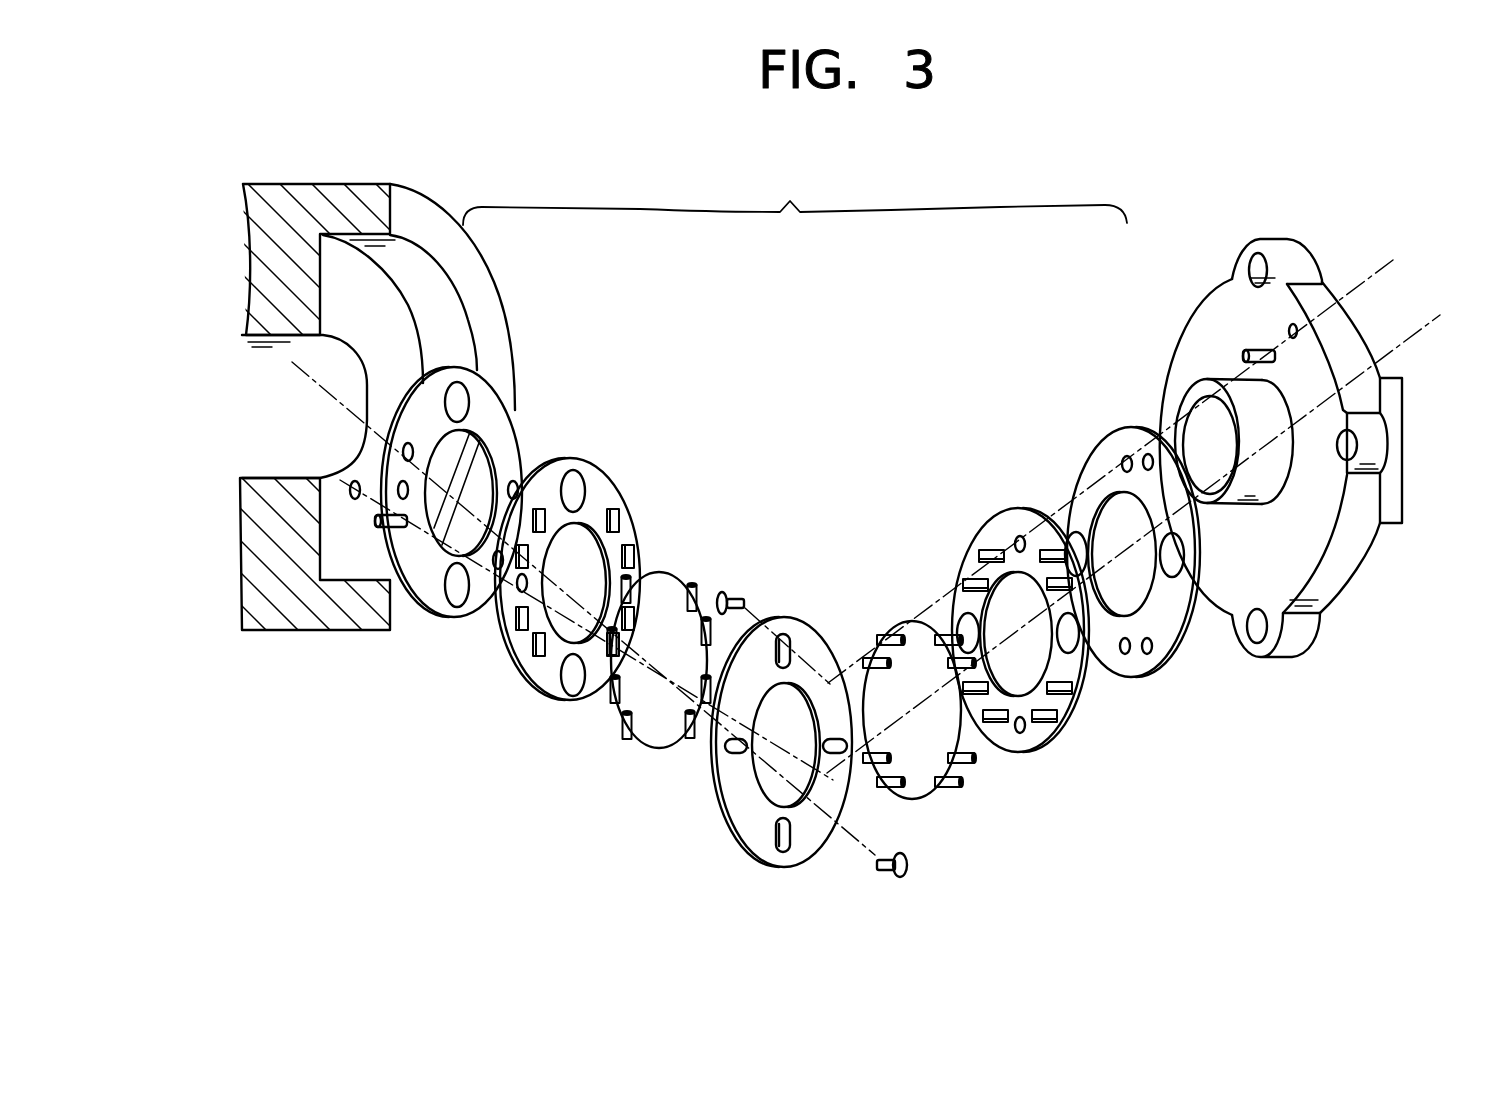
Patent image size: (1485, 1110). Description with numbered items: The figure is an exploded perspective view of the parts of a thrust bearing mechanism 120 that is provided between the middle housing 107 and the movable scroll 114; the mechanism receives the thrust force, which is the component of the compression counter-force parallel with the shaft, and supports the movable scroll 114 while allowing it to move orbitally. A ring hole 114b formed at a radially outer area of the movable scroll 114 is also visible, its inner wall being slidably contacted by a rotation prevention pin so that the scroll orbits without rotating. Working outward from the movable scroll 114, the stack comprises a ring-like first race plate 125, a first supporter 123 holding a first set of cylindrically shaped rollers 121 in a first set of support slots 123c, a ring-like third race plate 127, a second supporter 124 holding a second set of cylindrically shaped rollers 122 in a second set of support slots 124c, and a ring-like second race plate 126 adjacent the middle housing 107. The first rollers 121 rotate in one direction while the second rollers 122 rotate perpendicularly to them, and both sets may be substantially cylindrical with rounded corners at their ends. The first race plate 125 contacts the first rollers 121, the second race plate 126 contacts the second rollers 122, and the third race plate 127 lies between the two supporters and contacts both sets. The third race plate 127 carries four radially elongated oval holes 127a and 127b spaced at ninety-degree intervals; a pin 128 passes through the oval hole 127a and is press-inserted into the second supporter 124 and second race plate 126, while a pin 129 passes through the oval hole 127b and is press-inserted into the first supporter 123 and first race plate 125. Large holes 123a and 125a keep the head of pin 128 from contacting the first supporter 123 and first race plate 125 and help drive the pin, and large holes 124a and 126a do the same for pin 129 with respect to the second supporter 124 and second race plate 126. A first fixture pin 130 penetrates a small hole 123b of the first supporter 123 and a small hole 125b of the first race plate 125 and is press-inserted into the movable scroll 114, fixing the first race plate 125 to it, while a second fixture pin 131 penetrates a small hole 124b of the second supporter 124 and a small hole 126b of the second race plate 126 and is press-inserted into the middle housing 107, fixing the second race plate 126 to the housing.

The middle housing 107 is at (473, 280).
The movable scroll 114 is at (1330, 297).
The ring hole 114b is at (1264, 258).
The thrust bearing mechanism 120 is at (795, 195).
The first set of cylindrically shaped rollers 121 is at (957, 785).
The second set of cylindrically shaped rollers 122 is at (622, 733).
The first supporter 123 is at (990, 537).
The large hole 123a is at (965, 625).
The small hole 123b is at (1020, 536).
The first set of support slots 123c is at (1047, 718).
The second supporter 124 is at (540, 668).
The large hole 124a is at (577, 487).
The small hole 124b is at (520, 590).
The second set of support slots 124c is at (631, 557).
The first race plate 125 is at (1192, 608).
The large hole 125a is at (1072, 528).
The small hole 125b is at (1127, 456).
The second race plate 126 is at (440, 562).
The large hole 126a is at (462, 402).
The small hole 126b is at (403, 500).
The third race plate 127 is at (748, 813).
The oval hole 127a is at (730, 743).
The oval hole 127b is at (784, 640).
The pin 128 is at (907, 873).
The pin 129 is at (730, 593).
The first fixture pin 130 is at (1255, 350).
The second fixture pin 131 is at (378, 531).